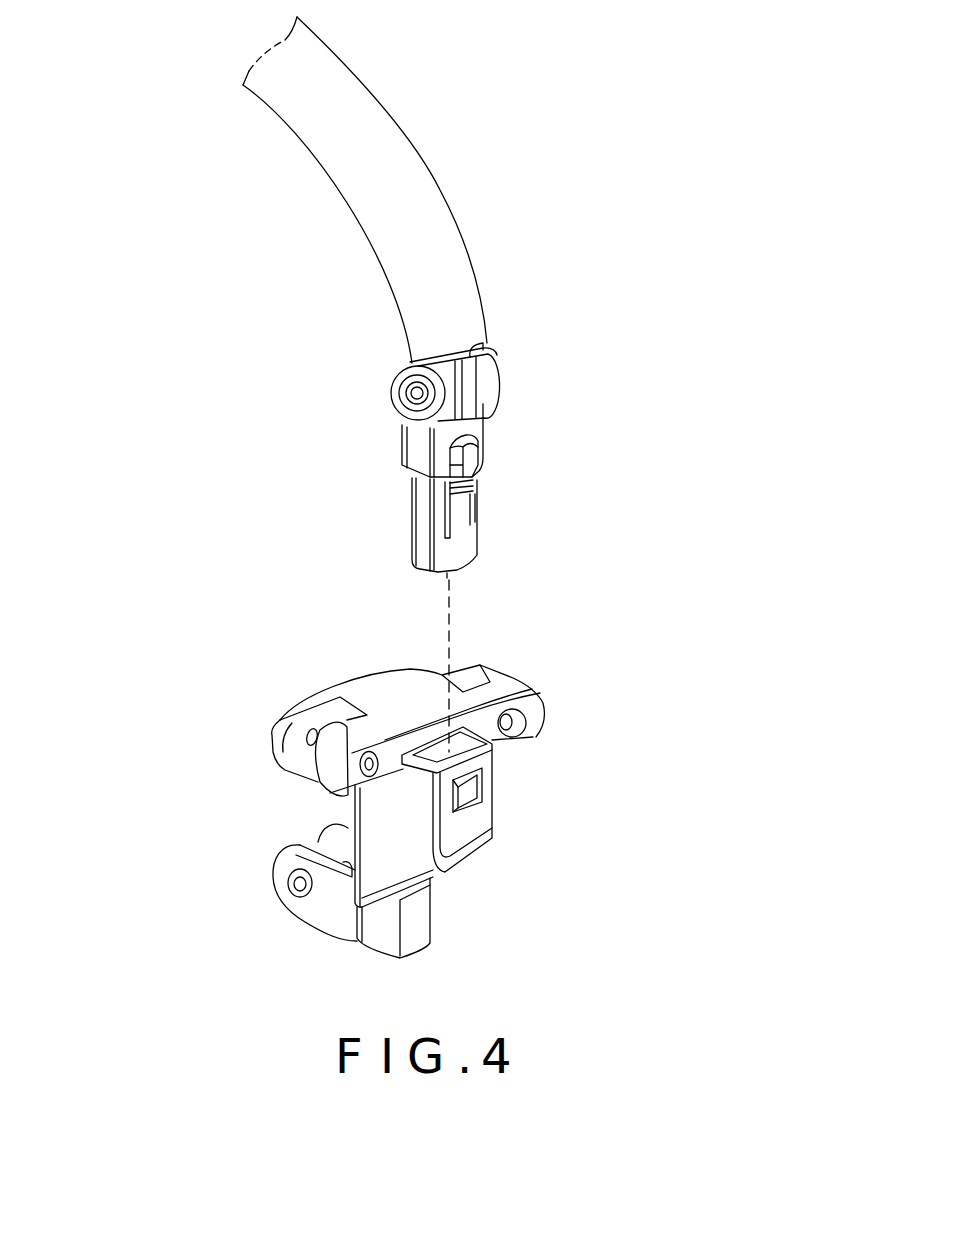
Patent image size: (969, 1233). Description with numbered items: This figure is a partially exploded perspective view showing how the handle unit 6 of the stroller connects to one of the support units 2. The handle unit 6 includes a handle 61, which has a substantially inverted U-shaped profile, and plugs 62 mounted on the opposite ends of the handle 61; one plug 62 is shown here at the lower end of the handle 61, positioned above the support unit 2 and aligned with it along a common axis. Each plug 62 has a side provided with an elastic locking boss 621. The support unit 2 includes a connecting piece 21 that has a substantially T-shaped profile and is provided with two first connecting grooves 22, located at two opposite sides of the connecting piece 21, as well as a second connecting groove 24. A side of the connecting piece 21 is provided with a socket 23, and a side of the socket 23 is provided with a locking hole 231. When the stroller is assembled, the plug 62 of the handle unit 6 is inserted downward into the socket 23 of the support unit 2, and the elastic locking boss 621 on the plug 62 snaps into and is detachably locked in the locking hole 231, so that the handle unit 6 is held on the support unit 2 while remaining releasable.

The handle unit 6 is at (485, 187).
The handle 61 is at (443, 243).
The plug 62 is at (460, 542).
The elastic locking boss 621 is at (472, 462).
The support unit 2 is at (248, 682).
The connecting piece 21 is at (395, 710).
The first connecting groove 22 is at (470, 682).
The socket 23 is at (487, 748).
The locking hole 231 is at (487, 800).
The second connecting groove 24 is at (293, 888).